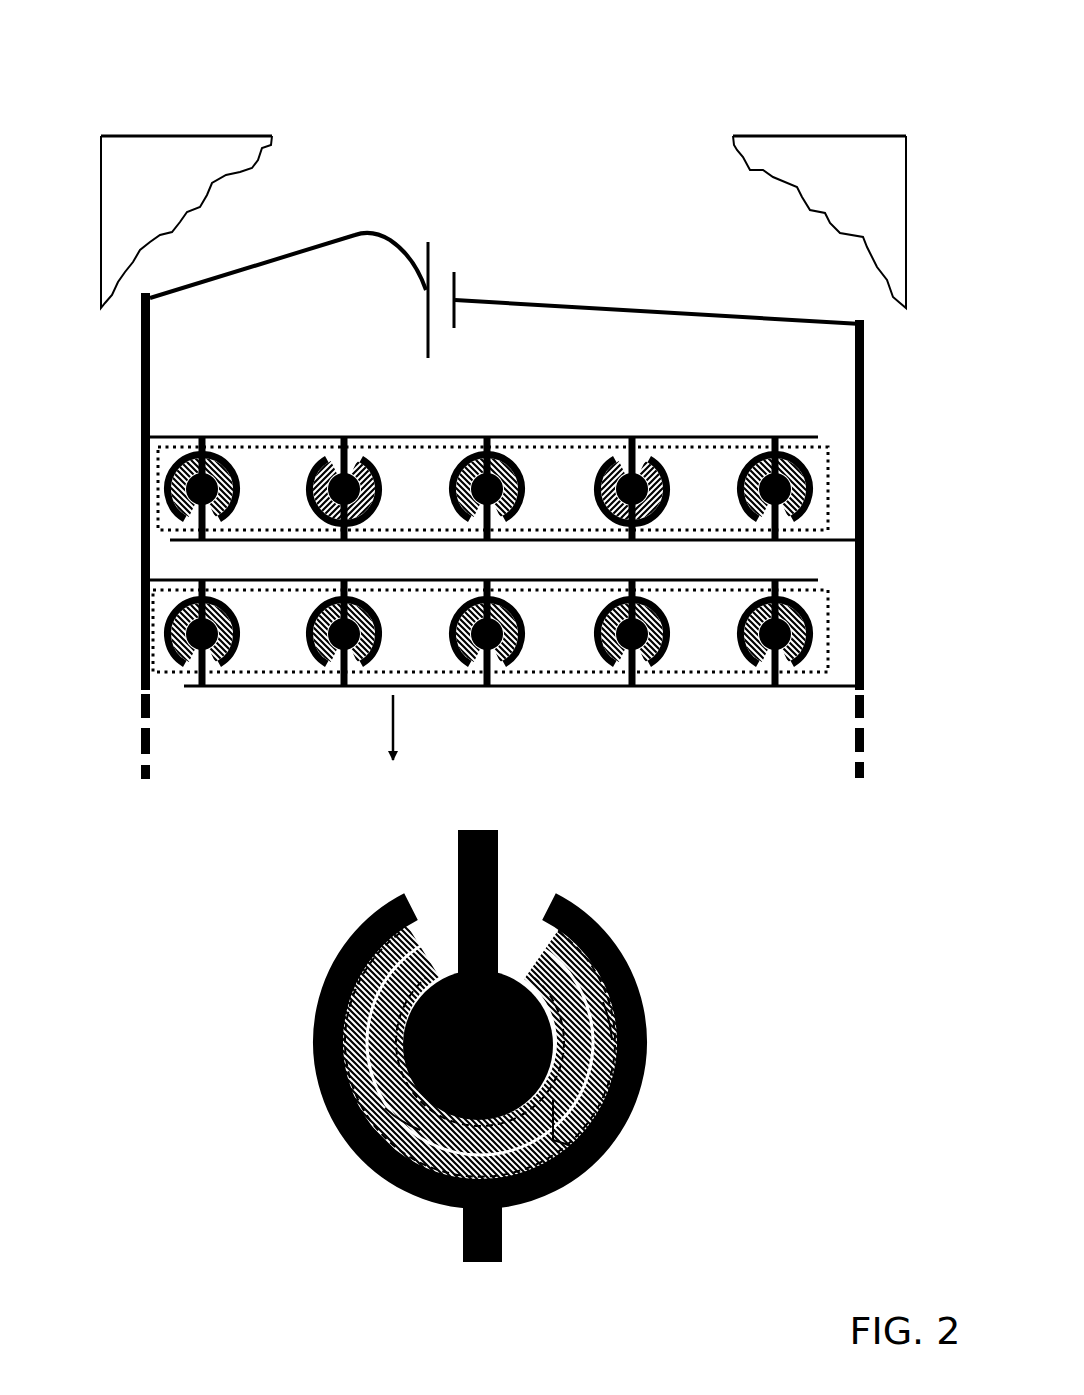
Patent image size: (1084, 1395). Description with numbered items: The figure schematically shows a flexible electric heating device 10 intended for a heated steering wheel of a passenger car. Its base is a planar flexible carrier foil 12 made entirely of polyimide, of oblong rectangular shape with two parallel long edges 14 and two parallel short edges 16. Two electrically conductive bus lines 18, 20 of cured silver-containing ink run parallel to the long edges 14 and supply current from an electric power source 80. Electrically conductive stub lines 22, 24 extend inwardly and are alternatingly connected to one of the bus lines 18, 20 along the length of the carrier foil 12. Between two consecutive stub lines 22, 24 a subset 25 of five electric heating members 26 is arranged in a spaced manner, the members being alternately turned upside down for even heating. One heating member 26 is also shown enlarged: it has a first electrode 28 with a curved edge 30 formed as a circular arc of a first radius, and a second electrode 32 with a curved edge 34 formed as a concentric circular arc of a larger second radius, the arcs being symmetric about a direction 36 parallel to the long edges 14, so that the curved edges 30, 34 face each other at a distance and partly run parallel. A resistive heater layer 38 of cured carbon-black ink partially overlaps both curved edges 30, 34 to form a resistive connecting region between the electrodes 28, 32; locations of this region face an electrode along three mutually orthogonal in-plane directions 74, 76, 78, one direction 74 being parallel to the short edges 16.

The flexible electric heating device 10 is at (160, 70).
The planar flexible carrier foil 12 is at (802, 157).
The long edges 14 is at (100, 215).
The short edges 16 is at (232, 133).
The electrically conductive bus line 18 is at (142, 393).
The electrically conductive bus line 20 is at (866, 392).
The electrically conductive stub line 22 is at (280, 437).
The electrically conductive stub line 24 is at (830, 540).
The subset of electric heating members 25 is at (715, 447).
The electric heating member 26 is at (586, 455).
The first electrically conductive electrode 28 is at (490, 880).
The curved edge of the first electrode 30 is at (537, 985).
The second electrically conductive electrode 32 is at (393, 1188).
The curved edge of the second electrode 34 is at (345, 1043).
The direction 36 is at (393, 725).
The resistive heater layer 38 is at (613, 1022).
The orthogonal direction 74 is at (560, 1122).
The orthogonal direction 76 is at (555, 1107).
The orthogonal direction 78 is at (482, 1191).
The electric power source 80 is at (458, 245).